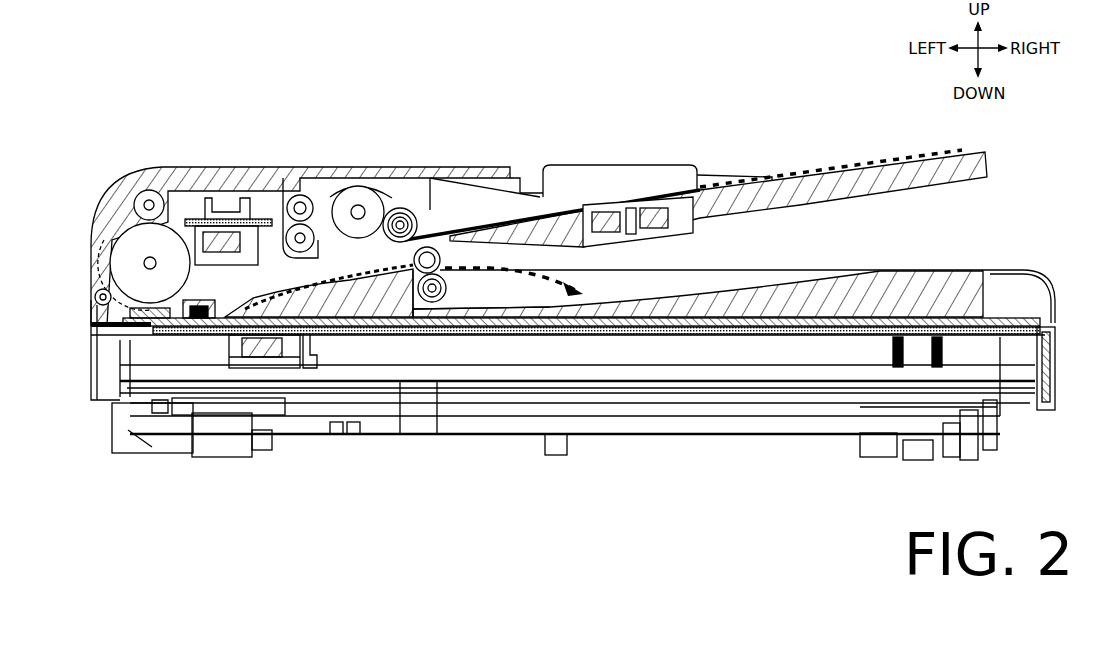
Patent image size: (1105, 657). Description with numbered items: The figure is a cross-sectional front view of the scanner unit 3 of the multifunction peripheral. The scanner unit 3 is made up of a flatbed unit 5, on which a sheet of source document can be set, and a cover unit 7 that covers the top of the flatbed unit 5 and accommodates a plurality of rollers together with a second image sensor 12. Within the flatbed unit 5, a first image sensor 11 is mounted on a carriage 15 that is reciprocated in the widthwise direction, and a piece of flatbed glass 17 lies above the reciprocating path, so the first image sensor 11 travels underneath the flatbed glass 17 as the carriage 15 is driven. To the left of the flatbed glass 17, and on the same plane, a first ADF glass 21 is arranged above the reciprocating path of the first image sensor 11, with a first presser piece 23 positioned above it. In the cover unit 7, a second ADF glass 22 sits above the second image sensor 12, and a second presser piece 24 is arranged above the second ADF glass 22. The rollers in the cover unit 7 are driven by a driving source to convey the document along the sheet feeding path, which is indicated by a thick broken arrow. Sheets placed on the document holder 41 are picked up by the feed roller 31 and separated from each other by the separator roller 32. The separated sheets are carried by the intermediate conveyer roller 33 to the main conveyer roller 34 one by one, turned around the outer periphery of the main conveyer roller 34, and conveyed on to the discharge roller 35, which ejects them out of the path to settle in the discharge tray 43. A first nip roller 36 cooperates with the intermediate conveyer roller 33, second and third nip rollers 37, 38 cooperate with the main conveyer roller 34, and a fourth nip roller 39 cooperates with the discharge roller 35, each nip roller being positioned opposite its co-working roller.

The scanner unit 3 is at (653, 160).
The flatbed unit 5 is at (1058, 411).
The cover unit 7 is at (1048, 298).
The first image sensor 11 is at (283, 345).
The second image sensor 12 is at (210, 265).
The carriage 15 is at (318, 362).
The flatbed glass 17 is at (506, 336).
The first ADF glass 21 is at (175, 342).
The second ADF glass 22 is at (192, 218).
The first presser piece 23 is at (191, 326).
The second presser piece 24 is at (233, 207).
The feed roller 31 is at (394, 210).
The separator roller 32 is at (337, 202).
The intermediate conveyer roller 33 is at (300, 194).
The main conveyer roller 34 is at (122, 242).
The discharge roller 35 is at (442, 260).
The first nip roller 36 is at (290, 230).
The second nip roller 37 is at (151, 194).
The third nip roller 38 is at (102, 305).
The fourth nip roller 39 is at (448, 290).
The document holder 41 is at (581, 197).
The discharge tray 43 is at (731, 300).